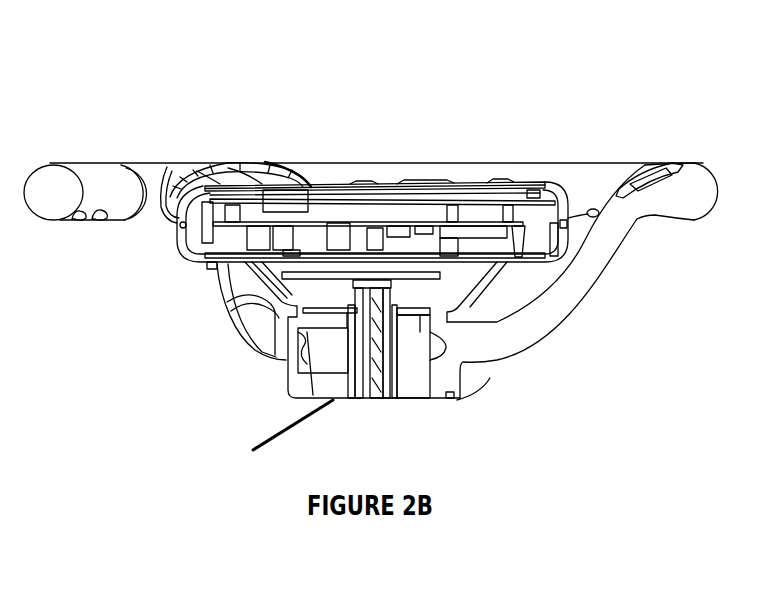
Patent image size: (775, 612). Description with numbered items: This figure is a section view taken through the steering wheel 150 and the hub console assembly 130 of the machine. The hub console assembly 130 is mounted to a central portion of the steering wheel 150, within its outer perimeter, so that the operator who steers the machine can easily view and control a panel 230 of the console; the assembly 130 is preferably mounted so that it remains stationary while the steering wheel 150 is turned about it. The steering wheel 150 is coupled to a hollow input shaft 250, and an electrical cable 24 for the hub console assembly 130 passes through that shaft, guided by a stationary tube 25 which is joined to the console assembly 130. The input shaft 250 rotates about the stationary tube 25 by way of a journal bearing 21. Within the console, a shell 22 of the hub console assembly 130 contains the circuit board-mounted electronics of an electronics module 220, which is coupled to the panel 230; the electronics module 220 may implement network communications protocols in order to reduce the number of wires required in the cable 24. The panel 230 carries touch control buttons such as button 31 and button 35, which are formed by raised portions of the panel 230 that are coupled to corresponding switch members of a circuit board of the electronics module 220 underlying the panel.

The hub console assembly 130 is at (564, 181).
The steering wheel 150 is at (590, 170).
The panel 230 is at (339, 182).
The touch control button 31 is at (380, 183).
The touch control button 35 is at (447, 183).
The shell 22 is at (182, 238).
The electronics module 220 is at (221, 247).
The journal bearing 21 is at (352, 326).
The electrical cable 24 is at (382, 398).
The stationary tube 25 is at (366, 392).
The hollow input shaft 250 is at (397, 393).